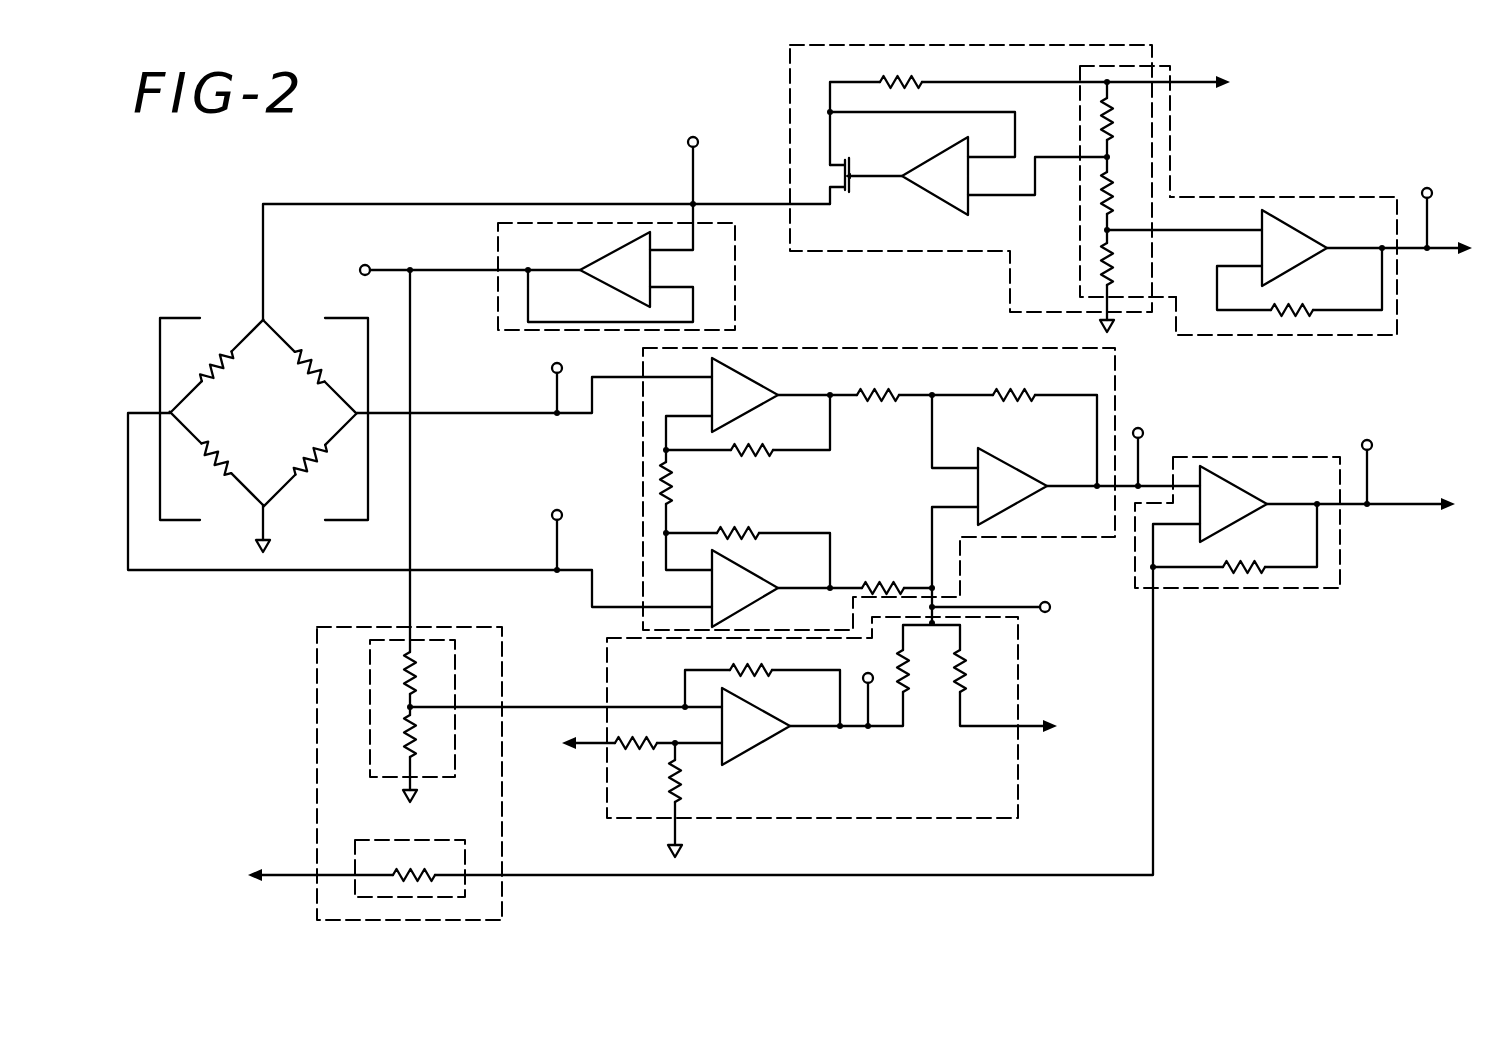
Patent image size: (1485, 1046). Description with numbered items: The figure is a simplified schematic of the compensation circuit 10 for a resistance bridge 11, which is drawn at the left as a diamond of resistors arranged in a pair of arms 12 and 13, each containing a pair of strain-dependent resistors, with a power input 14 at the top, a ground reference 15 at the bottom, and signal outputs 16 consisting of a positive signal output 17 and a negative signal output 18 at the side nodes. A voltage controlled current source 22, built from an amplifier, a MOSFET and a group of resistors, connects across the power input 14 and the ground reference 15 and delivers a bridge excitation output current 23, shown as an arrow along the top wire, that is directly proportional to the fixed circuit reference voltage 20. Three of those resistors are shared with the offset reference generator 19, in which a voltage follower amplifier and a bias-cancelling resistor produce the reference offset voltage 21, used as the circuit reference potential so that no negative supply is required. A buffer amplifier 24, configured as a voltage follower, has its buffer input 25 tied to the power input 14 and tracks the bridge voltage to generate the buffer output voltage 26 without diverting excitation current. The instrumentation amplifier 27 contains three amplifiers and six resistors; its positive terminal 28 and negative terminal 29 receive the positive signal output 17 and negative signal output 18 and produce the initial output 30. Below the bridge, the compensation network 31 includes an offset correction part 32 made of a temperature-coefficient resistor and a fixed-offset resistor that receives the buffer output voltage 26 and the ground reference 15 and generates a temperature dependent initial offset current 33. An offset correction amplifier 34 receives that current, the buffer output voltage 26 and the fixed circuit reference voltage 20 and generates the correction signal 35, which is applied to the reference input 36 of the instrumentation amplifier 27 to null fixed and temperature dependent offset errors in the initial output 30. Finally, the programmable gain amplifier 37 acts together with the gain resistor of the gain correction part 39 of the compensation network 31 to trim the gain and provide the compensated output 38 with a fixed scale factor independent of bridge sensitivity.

The compensation circuit 10 is at (548, 130).
The resistance bridge 11 is at (233, 312).
The arm 12 is at (163, 310).
The arm 13 is at (370, 352).
The power input 14 is at (268, 312).
The ground reference 15 is at (268, 508).
The signal outputs 16 is at (433, 413).
The positive signal output 17 is at (507, 568).
The negative signal output 18 is at (497, 413).
The offset reference generator 19 is at (1345, 336).
The fixed circuit reference voltage 20 is at (1183, 85).
The reference offset voltage 21 is at (1437, 253).
The voltage controlled current source 22 is at (790, 90).
The bridge excitation output current 23 is at (407, 195).
The buffer amplifier 24 is at (735, 292).
The buffer input 25 is at (695, 213).
The buffer output voltage 26 is at (456, 268).
The instrumentation amplifier 27 is at (935, 348).
The positive terminal 28 is at (643, 607).
The negative terminal 29 is at (645, 378).
The initial output 30 is at (1142, 483).
The compensation network 31 is at (317, 742).
The offset correction part 32 is at (370, 684).
The initial offset current 33 is at (576, 700).
The offset correction amplifier 34 is at (1020, 762).
The correction signal 35 is at (1050, 612).
The reference input 36 is at (935, 598).
The programmable gain amplifier 37 is at (1293, 455).
The compensated output 38 is at (1413, 502).
The gain correction part 39 is at (465, 865).